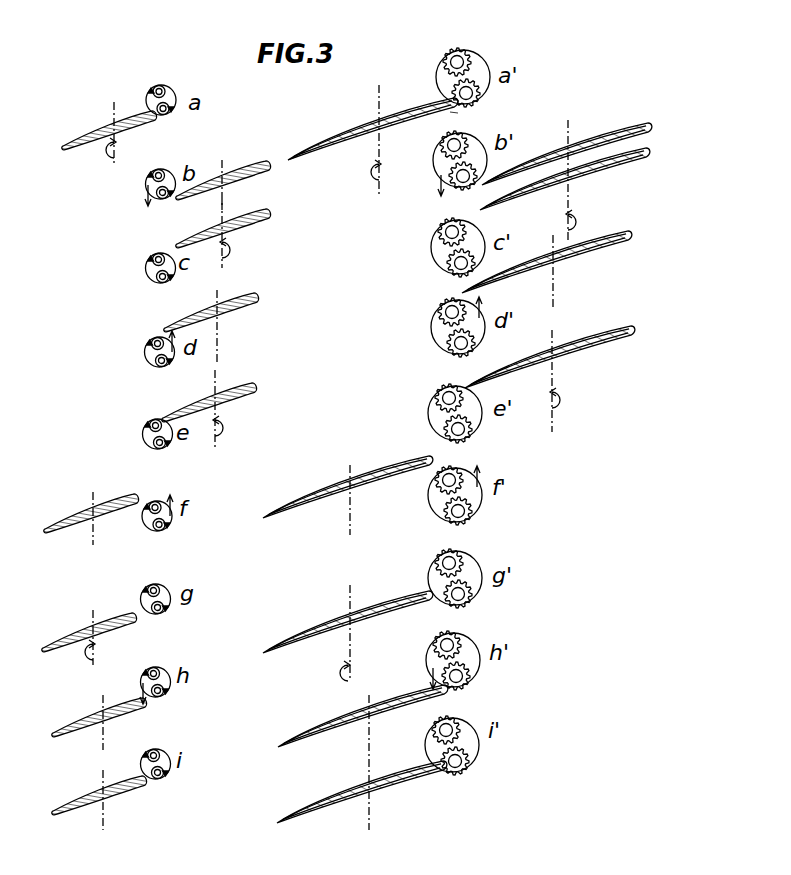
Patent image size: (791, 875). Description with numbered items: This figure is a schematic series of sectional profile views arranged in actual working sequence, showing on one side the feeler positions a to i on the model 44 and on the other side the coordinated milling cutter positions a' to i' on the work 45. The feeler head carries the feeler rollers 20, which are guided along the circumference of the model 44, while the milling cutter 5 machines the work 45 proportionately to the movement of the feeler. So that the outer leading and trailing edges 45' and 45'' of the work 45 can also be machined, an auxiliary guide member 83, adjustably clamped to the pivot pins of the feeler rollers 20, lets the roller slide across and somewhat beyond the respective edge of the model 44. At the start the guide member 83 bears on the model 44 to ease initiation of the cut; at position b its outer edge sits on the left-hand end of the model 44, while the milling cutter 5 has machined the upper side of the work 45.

The milling cutter 5 is at (466, 55).
The feeler roller 20 is at (160, 85).
The model 44 is at (84, 139).
The work 45 is at (372, 128).
The leading edge of the work 45' is at (473, 125).
The trailing edge of the work 45'' is at (280, 144).
The auxiliary guide member 83 is at (152, 89).